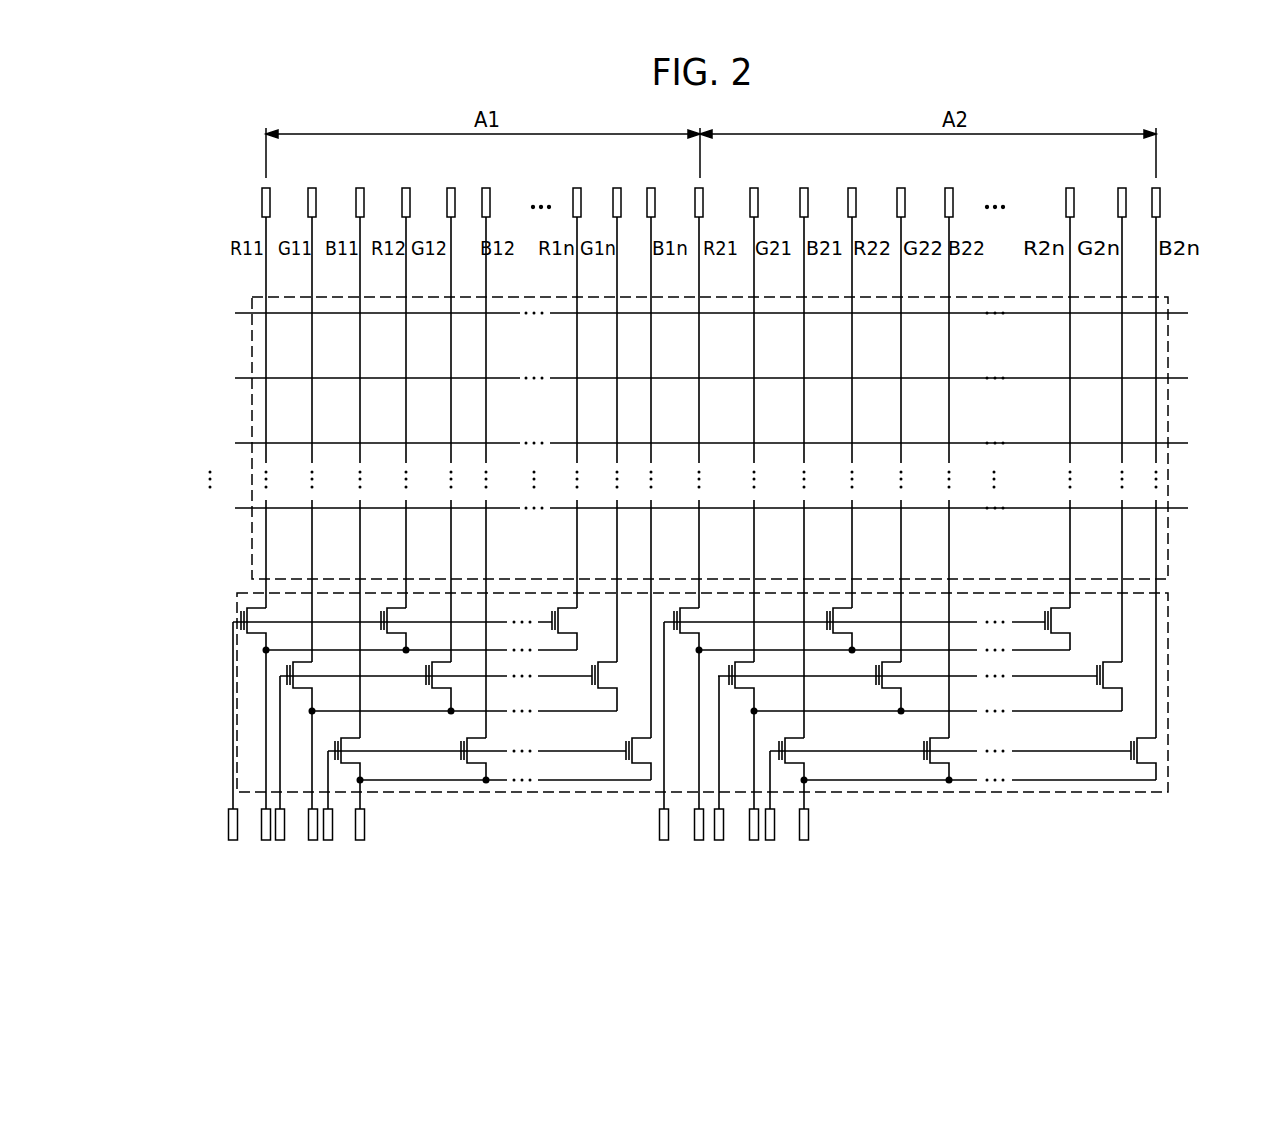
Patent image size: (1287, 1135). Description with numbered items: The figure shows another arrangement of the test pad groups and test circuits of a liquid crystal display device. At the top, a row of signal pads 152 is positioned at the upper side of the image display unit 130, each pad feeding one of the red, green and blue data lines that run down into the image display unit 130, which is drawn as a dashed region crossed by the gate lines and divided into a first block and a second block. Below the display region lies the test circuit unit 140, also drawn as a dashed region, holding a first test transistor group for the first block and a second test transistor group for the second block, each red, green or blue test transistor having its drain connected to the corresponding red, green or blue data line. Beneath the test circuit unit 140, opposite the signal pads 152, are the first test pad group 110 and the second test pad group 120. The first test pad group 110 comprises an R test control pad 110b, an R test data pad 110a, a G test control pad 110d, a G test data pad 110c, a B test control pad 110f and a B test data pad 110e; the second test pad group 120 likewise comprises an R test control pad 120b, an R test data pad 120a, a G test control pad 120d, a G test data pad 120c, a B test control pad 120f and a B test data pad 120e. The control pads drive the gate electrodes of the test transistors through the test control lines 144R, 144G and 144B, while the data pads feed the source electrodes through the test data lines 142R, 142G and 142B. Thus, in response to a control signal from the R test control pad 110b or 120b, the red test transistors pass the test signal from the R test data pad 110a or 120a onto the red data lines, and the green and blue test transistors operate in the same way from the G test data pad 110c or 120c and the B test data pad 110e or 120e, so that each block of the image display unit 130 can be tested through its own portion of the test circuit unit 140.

The signal pads 152 is at (268, 188).
The image display unit 130 is at (1168, 553).
The test circuit unit 140 is at (697, 701).
The test data line 142R is at (266, 668).
The test control line 144R is at (232, 647).
The test data line 142G is at (313, 738).
The test control line 144G is at (280, 704).
The test data line 142B is at (360, 789).
The test control line 144B is at (328, 767).
The first test pad group 110 is at (334, 871).
The R test data pad 110a is at (266, 841).
The R test control pad 110b is at (229, 841).
The G test data pad 110c is at (313, 842).
The G test control pad 110d is at (280, 843).
The B test data pad 110e is at (362, 842).
The B test control pad 110f is at (328, 842).
The second test pad group 120 is at (779, 870).
The R test data pad 120a is at (698, 839).
The R test control pad 120b is at (662, 839).
The G test data pad 120c is at (754, 840).
The G test control pad 120d is at (719, 840).
The B test data pad 120e is at (804, 840).
The B test control pad 120f is at (770, 840).